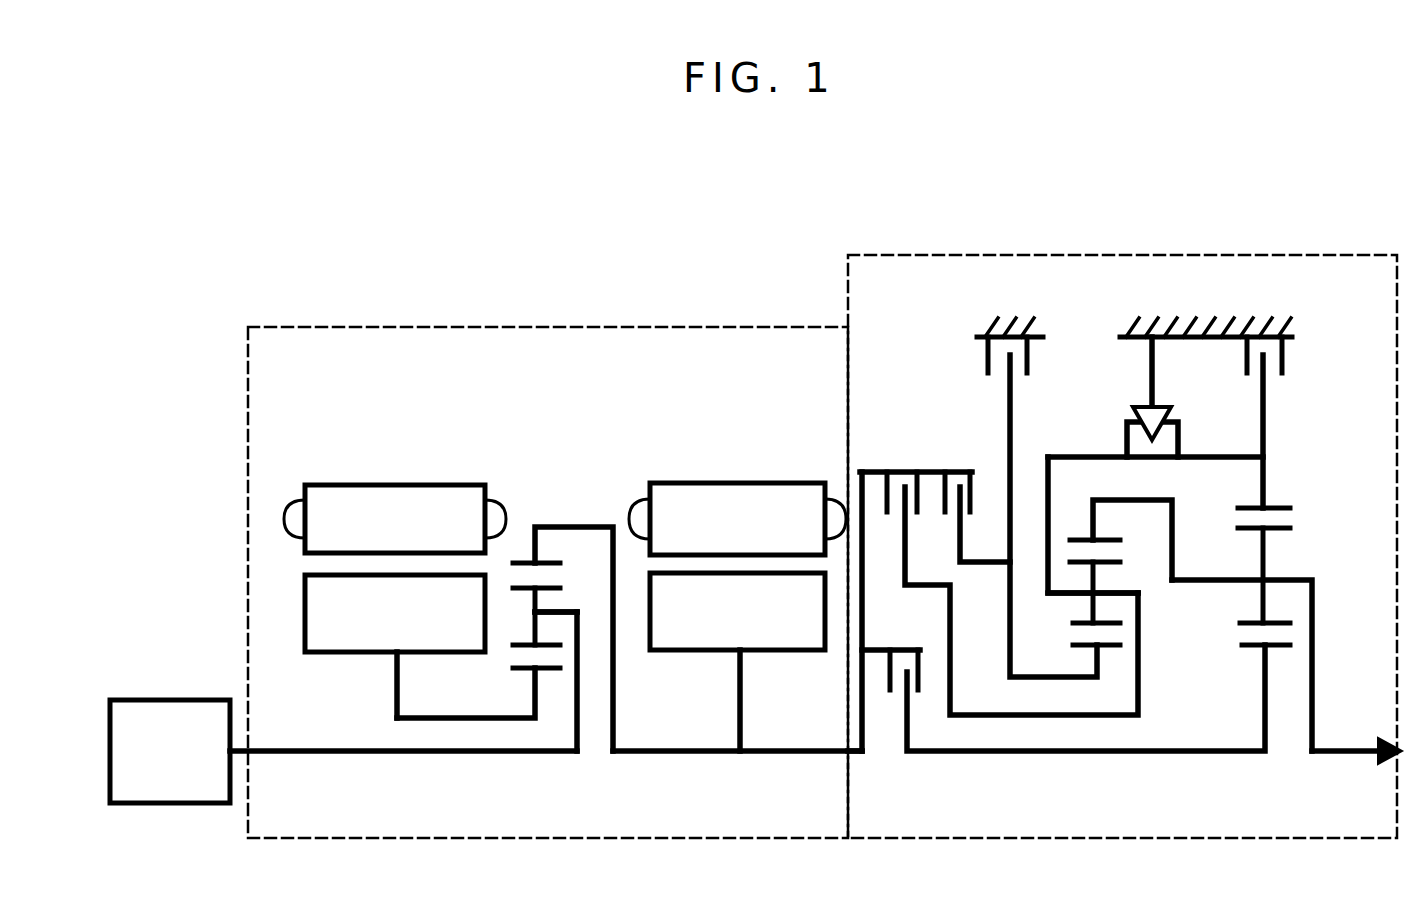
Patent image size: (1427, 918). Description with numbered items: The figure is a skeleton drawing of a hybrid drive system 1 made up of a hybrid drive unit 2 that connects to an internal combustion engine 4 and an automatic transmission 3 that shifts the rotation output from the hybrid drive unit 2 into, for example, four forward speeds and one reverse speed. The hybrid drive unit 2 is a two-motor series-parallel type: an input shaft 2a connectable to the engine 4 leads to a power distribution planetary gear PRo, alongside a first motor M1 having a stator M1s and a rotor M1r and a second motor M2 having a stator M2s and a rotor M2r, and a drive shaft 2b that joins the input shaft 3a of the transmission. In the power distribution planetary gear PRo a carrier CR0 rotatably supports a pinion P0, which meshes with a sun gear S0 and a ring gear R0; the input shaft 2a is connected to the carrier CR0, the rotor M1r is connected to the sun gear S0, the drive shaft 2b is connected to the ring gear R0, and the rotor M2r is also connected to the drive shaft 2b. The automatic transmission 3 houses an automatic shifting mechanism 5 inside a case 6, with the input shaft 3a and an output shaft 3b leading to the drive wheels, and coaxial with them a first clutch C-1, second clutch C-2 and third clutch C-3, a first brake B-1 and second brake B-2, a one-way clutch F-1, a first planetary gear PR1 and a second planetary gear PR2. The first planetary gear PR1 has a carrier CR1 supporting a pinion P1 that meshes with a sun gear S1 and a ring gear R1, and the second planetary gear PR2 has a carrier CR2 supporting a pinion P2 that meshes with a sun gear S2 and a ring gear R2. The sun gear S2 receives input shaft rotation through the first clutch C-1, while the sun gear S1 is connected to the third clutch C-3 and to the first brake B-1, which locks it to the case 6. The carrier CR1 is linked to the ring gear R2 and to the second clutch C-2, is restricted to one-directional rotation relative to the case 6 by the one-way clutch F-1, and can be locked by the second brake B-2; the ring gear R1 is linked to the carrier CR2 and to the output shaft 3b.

The hybrid drive system 1 is at (772, 242).
The hybrid drive unit 2 is at (526, 322).
The automatic transmission 3 is at (1090, 250).
The internal combustion engine 4 is at (158, 700).
The automatic shifting mechanism 5 is at (1089, 343).
The case 6 is at (985, 323).
The input shaft 2a is at (358, 754).
The drive shaft 2b is at (772, 754).
The input shaft 3a is at (850, 754).
The output shaft 3b is at (1342, 754).
The first motor M1 is at (395, 563).
The stator M1s is at (415, 500).
The rotor M1r is at (338, 652).
The second motor M2 is at (737, 567).
The stator M2s is at (736, 500).
The rotor M2r is at (755, 653).
The power distribution planetary gear PRo is at (539, 589).
The ring gear R0 is at (548, 562).
The pinion P0 is at (518, 594).
The sun gear S0 is at (522, 670).
The carrier CR0 is at (613, 640).
The first clutch C-1 is at (1063, 685).
The second clutch C-2 is at (999, 579).
The third clutch C-3 is at (967, 502).
The first brake B-1 is at (1042, 507).
The second brake B-2 is at (1288, 355).
The one-way clutch F-1 is at (1161, 397).
The first planetary gear PR1 is at (1122, 543).
The ring gear R1 is at (1104, 534).
The pinion P1 is at (1104, 566).
The sun gear S1 is at (1100, 650).
The carrier CR1 is at (1175, 620).
The second planetary gear PR2 is at (1272, 567).
The ring gear R2 is at (1268, 509).
The pinion P2 is at (1272, 532).
The sun gear S2 is at (1256, 648).
The carrier CR2 is at (1315, 607).